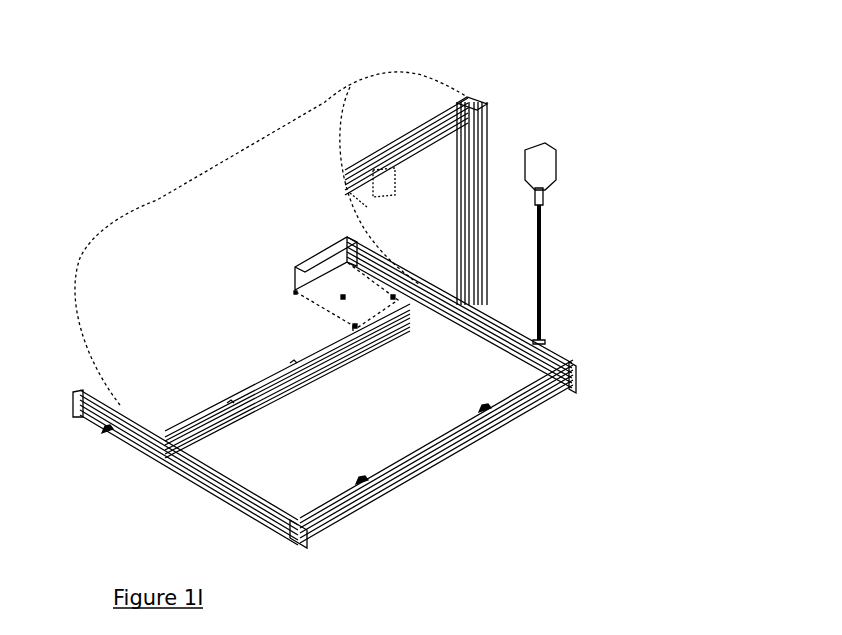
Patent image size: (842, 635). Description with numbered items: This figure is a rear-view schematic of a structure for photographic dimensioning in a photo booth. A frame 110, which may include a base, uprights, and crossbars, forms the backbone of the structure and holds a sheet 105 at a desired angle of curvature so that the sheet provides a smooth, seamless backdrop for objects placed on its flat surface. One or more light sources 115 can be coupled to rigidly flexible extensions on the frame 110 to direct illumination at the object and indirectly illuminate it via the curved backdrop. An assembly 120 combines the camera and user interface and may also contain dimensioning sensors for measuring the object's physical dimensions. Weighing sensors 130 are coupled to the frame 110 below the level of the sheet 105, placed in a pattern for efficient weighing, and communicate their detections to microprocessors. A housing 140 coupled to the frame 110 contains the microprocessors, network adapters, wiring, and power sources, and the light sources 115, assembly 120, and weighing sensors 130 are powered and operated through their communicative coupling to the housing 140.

The sheet 105 is at (285, 118).
The frame 110 is at (567, 365).
The light sources 115 is at (566, 160).
The assembly 120 is at (381, 180).
The sensors 130 is at (380, 481).
The housing 140 is at (318, 297).